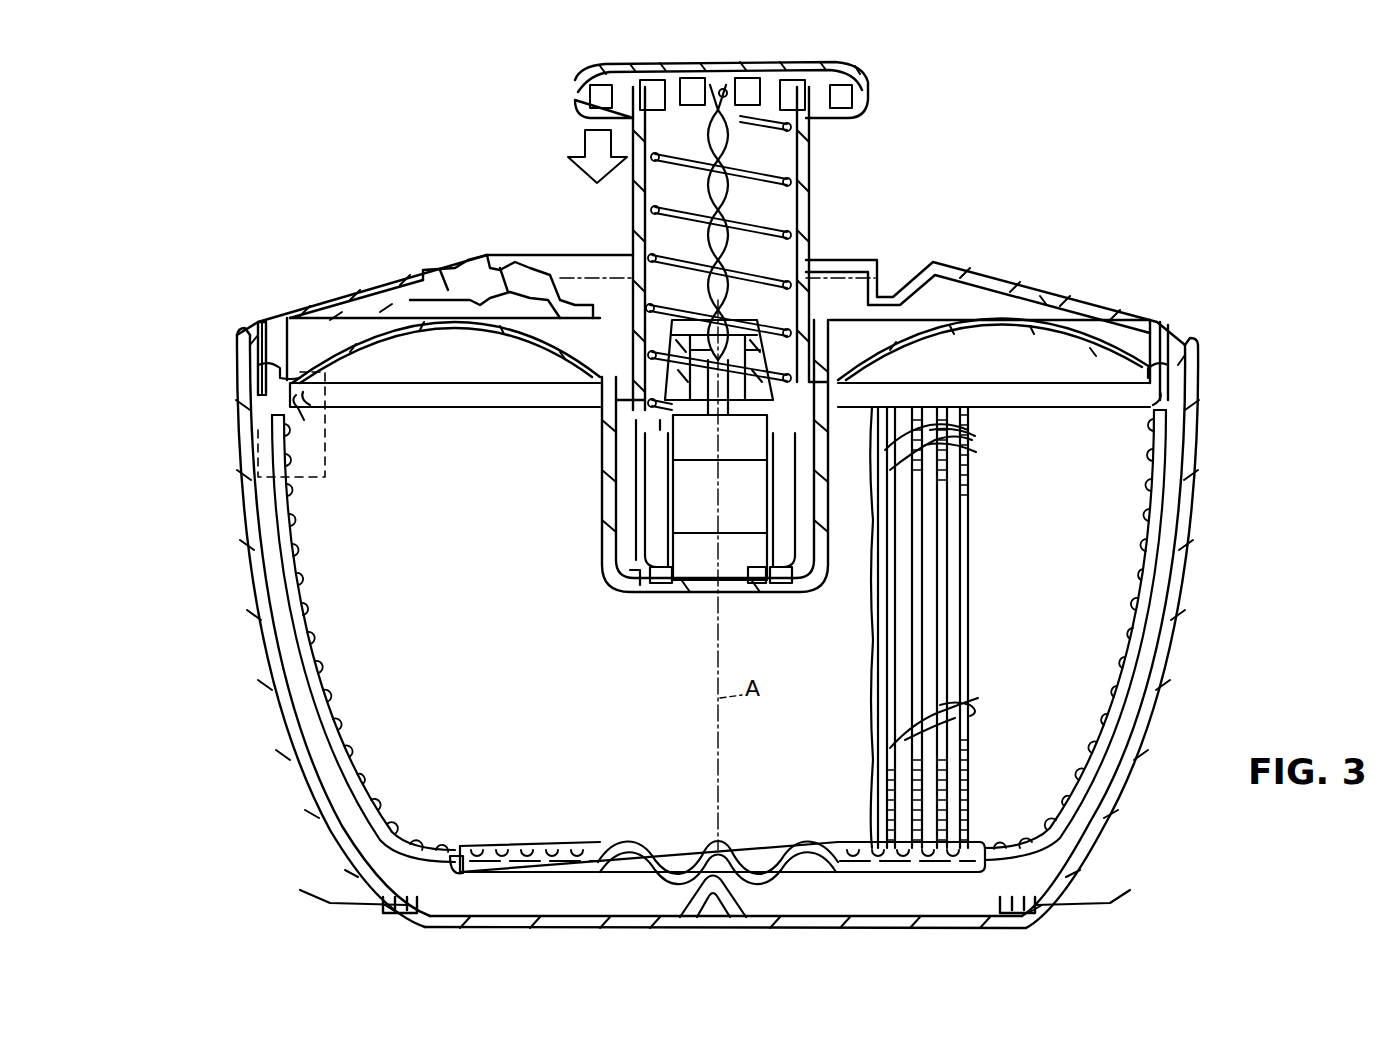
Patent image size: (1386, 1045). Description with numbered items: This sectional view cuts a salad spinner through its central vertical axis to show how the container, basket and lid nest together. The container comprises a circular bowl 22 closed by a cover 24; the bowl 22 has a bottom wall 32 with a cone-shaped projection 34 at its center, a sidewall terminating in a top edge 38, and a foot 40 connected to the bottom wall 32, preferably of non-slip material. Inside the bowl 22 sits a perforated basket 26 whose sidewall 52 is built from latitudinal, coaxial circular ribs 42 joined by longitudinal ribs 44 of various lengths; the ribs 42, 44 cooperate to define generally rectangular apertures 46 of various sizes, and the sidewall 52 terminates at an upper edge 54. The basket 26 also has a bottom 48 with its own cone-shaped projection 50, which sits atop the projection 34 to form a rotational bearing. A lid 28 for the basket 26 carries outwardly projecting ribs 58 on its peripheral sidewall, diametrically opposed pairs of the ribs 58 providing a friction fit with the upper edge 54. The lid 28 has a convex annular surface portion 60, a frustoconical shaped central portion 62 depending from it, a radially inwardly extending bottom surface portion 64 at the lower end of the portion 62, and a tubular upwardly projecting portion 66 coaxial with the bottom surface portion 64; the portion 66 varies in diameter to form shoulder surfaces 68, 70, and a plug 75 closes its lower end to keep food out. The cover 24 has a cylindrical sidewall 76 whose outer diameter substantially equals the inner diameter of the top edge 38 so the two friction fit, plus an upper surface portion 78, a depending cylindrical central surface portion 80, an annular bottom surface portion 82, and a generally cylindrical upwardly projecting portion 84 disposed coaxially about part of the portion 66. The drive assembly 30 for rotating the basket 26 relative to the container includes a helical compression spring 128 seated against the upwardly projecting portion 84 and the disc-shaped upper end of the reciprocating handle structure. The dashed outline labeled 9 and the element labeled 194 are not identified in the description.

The detail section 9 is at (340, 477).
The bowl 22 is at (1152, 732).
The cover 24 is at (1088, 292).
The perforated basket 26 is at (345, 768).
The lid 28 is at (436, 328).
The drive assembly 30 is at (870, 98).
The bottom wall 32 is at (882, 905).
The cone-shaped projection 34 is at (745, 900).
The top edge 38 is at (240, 360).
The foot 40 is at (520, 870).
The circular ribs 42 is at (972, 466).
The longitudinal ribs 44 is at (968, 698).
The apertures 46 is at (976, 436).
The bottom 48 is at (556, 860).
The cone-shaped projection 50 is at (728, 852).
The sidewall 52 is at (1098, 712).
The upper edge 54 is at (244, 386).
The ribs 58 is at (1165, 406).
The convex annular surface portion 60 is at (520, 340).
The frustoconical shaped central portion 62 is at (826, 536).
The bottom surface portion 64 is at (790, 578).
The upwardly projecting portion 66 is at (660, 590).
The shoulder surface 68 is at (674, 450).
The shoulder surface 70 is at (662, 422).
The plug 75 is at (758, 590).
The cylindrical sidewall 76 is at (262, 322).
The upper surface portion 78 is at (1046, 300).
The central surface portion 80 is at (636, 482).
The annular bottom surface portion 82 is at (634, 582).
The upwardly projecting portion 84 is at (640, 522).
The helical compression spring 128 is at (755, 191).
The drive column 194 is at (810, 242).